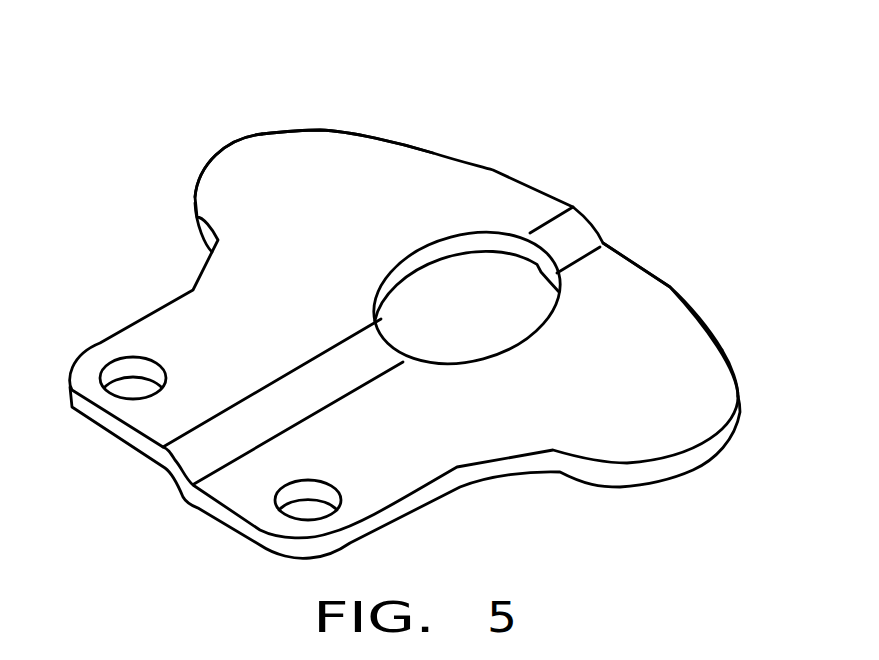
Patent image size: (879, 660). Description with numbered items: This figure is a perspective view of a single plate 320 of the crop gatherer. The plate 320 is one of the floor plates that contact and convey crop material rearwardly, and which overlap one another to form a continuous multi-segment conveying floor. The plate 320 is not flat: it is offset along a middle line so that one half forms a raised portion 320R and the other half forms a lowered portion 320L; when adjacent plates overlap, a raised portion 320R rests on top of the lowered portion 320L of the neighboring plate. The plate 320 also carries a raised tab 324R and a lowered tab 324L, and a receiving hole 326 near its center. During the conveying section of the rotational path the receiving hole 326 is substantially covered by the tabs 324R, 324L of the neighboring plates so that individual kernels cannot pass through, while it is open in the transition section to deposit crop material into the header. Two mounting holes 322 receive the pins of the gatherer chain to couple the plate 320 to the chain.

The plate 320 is at (480, 126).
The raised portion 320R is at (315, 166).
The lowered portion 320L is at (652, 330).
The raised tab 324R is at (227, 170).
The lowered tab 324L is at (723, 410).
The receiving hole 326 is at (495, 243).
The mounting hole 322 is at (120, 378).